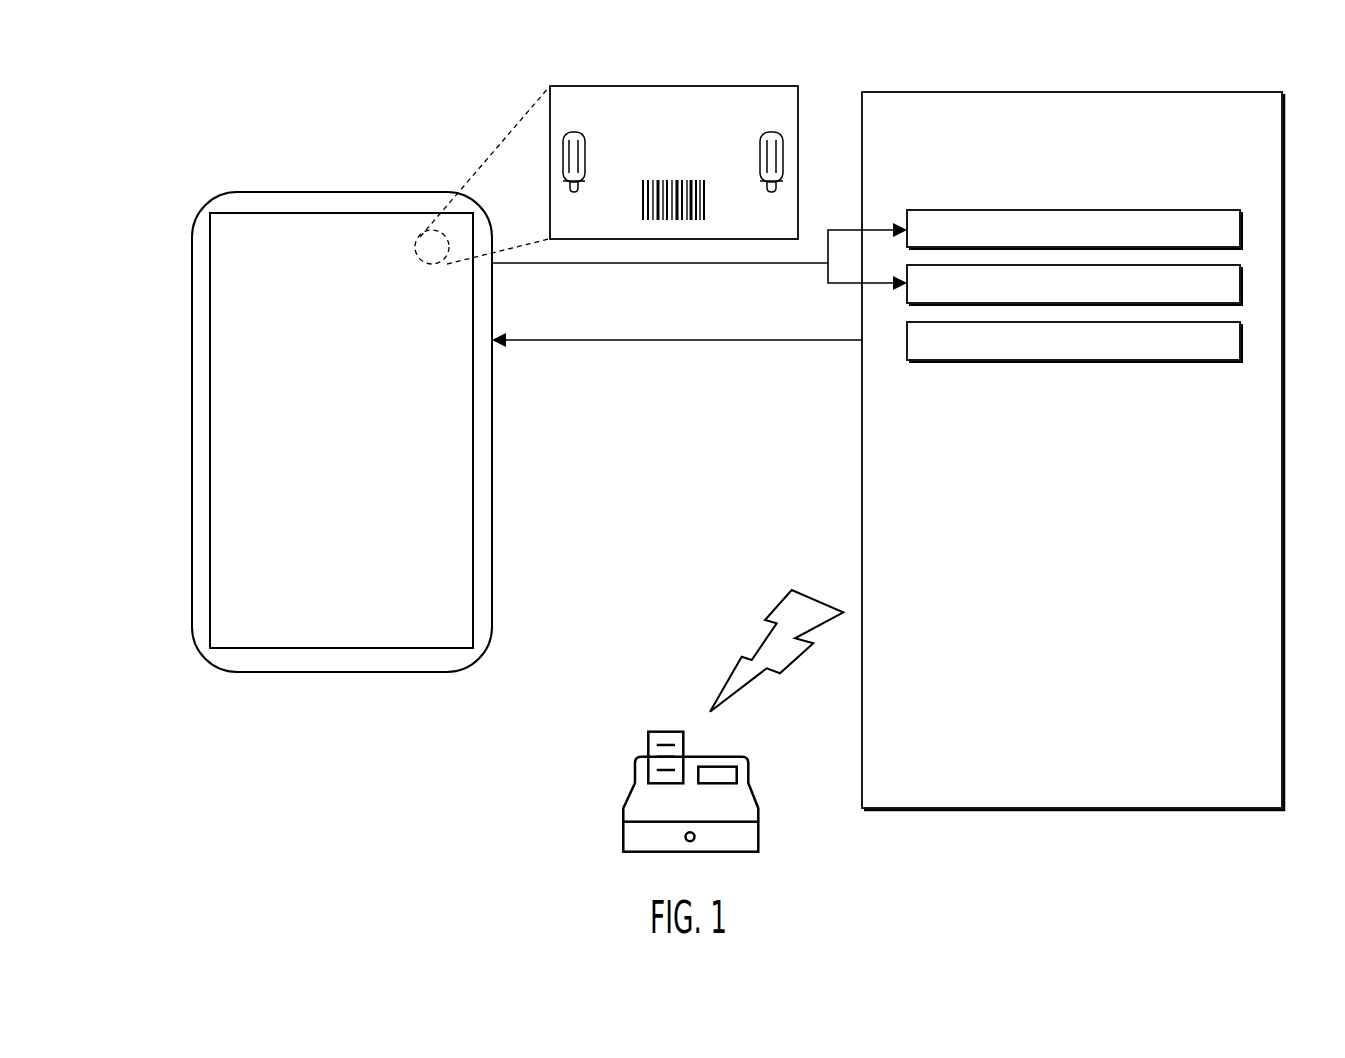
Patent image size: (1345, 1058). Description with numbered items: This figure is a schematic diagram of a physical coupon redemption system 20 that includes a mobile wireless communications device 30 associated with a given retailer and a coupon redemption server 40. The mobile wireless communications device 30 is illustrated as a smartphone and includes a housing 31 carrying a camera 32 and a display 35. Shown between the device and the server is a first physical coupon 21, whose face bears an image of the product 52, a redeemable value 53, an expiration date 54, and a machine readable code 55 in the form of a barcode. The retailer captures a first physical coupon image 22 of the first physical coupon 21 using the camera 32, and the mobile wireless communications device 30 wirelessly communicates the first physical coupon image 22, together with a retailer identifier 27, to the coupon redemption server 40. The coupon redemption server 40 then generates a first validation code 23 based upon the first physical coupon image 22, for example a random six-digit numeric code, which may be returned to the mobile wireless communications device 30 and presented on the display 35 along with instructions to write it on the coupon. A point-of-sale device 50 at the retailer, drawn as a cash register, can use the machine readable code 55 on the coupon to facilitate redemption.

The physical coupon redemption system 20 is at (366, 107).
The mobile wireless communications device 30 is at (261, 182).
The housing 31 is at (190, 438).
The camera 32 is at (418, 242).
The display 35 is at (235, 568).
The first validation code 23 is at (378, 476).
The first physical coupon 21 is at (705, 86).
The image of the product 52 is at (629, 140).
The redeemable value 53 is at (685, 90).
The expiration date 54 is at (621, 173).
The machine readable code 55 is at (693, 220).
The coupon redemption server 40 is at (952, 82).
The retailer identifier 27 is at (1242, 228).
The first physical coupon image 22 is at (1242, 284).
The point-of-sale device 50 is at (632, 810).